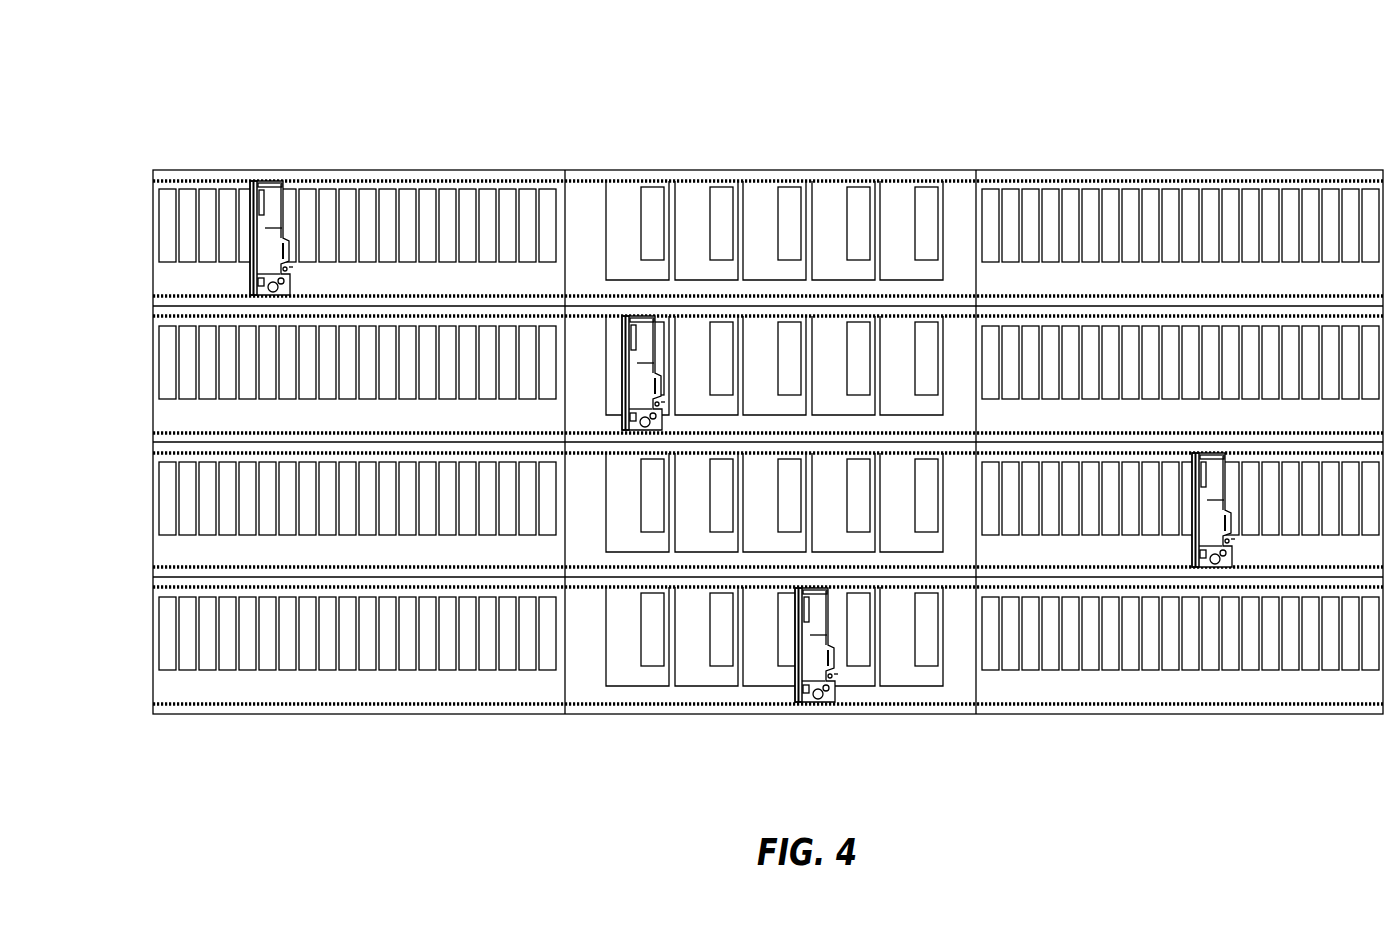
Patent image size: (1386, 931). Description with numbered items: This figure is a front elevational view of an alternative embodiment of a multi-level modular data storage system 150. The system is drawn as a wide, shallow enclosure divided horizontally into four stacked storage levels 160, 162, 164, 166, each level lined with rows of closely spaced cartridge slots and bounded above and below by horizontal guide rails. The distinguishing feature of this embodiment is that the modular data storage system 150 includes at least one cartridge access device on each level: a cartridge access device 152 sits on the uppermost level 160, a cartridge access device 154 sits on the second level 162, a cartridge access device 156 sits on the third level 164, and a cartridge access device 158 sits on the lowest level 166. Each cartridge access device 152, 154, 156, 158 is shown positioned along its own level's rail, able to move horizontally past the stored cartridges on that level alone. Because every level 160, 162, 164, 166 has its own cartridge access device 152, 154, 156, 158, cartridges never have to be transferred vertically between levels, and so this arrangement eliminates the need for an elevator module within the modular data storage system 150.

The modular data storage system 150 is at (903, 78).
The cartridge access device 152 is at (266, 179).
The cartridge access device 154 is at (632, 313).
The cartridge access device 156 is at (1212, 571).
The cartridge access device 158 is at (813, 710).
The level 160 is at (151, 237).
The level 162 is at (151, 373).
The level 164 is at (151, 509).
The level 166 is at (151, 644).